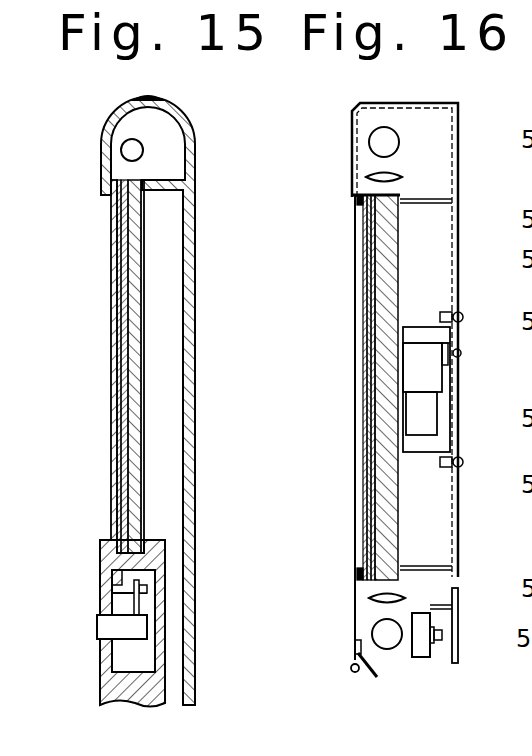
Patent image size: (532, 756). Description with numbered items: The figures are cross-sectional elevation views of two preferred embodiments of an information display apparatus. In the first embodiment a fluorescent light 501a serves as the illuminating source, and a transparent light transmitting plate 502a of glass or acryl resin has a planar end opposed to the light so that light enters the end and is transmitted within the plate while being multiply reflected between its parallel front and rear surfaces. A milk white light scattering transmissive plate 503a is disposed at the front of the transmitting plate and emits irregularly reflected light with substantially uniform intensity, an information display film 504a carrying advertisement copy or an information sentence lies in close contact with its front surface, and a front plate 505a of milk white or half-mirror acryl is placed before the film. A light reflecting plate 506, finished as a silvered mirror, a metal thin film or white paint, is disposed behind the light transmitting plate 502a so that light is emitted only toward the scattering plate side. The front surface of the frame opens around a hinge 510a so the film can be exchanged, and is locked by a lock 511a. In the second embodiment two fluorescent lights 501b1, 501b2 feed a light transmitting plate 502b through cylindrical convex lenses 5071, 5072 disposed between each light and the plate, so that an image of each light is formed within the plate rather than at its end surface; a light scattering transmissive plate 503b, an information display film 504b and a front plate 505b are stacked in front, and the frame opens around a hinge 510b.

In FIG. 15, the fluorescent light 501a is at (128, 152).
In FIG. 15, the light transmitting plate 502a is at (128, 270).
In FIG. 15, the light scattering transmissive plate 503a is at (125, 340).
In FIG. 15, the information display film 504a is at (125, 447).
In FIG. 15, the front plate 505a is at (114, 502).
In FIG. 15, the light reflecting plate 506 is at (147, 460).
In FIG. 15, the hinge 510a is at (150, 97).
In FIG. 15, the lock 511a is at (112, 625).
In FIG. 16, the fluorescent light 501b1 is at (380, 142).
In FIG. 16, the fluorescent light 501b2 is at (382, 634).
In FIG. 16, the light transmitting plate 502b is at (388, 246).
In FIG. 16, the light scattering transmissive plate 503b is at (378, 312).
In FIG. 16, the information display film 504b is at (372, 412).
In FIG. 16, the front plate 505b is at (365, 490).
In FIG. 16, the cylindrical convex lens 5071 is at (395, 178).
In FIG. 16, the cylindrical convex lens 5072 is at (370, 598).
In FIG. 16, the hinge 510b is at (356, 673).